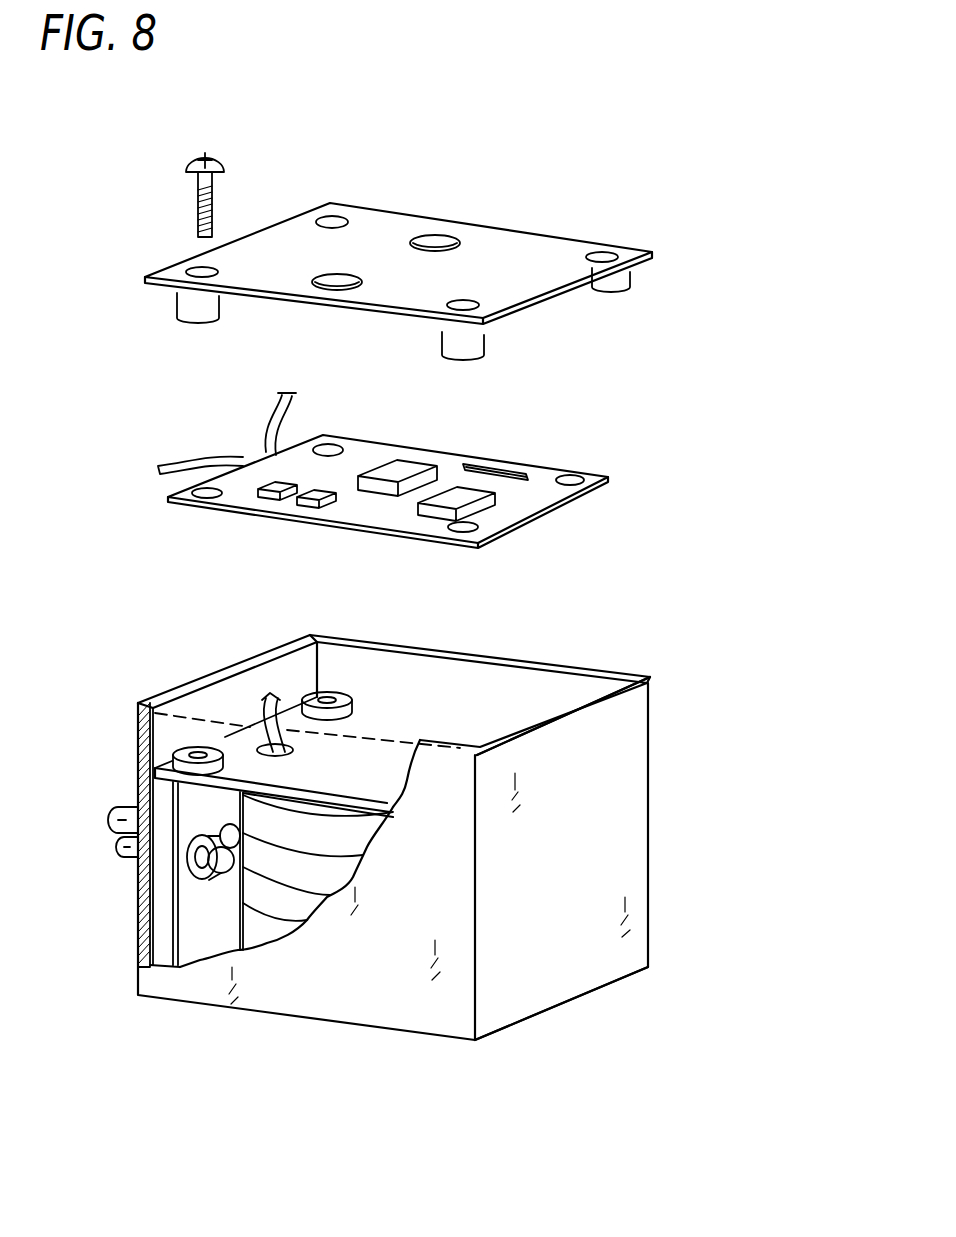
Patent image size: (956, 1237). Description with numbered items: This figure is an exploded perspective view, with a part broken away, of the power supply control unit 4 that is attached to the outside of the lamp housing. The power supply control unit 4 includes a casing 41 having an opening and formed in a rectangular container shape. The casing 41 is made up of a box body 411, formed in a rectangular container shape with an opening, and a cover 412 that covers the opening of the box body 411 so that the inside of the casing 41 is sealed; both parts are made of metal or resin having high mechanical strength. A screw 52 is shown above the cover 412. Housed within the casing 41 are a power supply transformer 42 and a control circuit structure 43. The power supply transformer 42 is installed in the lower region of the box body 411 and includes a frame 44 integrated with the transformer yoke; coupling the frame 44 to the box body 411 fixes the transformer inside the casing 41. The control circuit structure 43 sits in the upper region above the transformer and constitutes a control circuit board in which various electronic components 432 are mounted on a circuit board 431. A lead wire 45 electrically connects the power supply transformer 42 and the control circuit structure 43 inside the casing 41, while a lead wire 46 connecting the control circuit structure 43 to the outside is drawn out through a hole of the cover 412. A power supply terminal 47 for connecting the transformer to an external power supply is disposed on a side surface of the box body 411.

The power supply control unit 4 is at (369, 198).
The screw 52 is at (193, 180).
The cover 412 is at (525, 230).
The control circuit structure 43 is at (555, 513).
The circuit board 431 is at (377, 515).
The electronic components 432 is at (477, 463).
The lead wire 45 is at (197, 460).
The lead wire 46 is at (268, 420).
The casing 41 is at (652, 713).
The box body 411 is at (598, 943).
The frame 44 is at (423, 725).
The power supply transformer 42 is at (260, 893).
The power supply terminal 47 is at (122, 807).